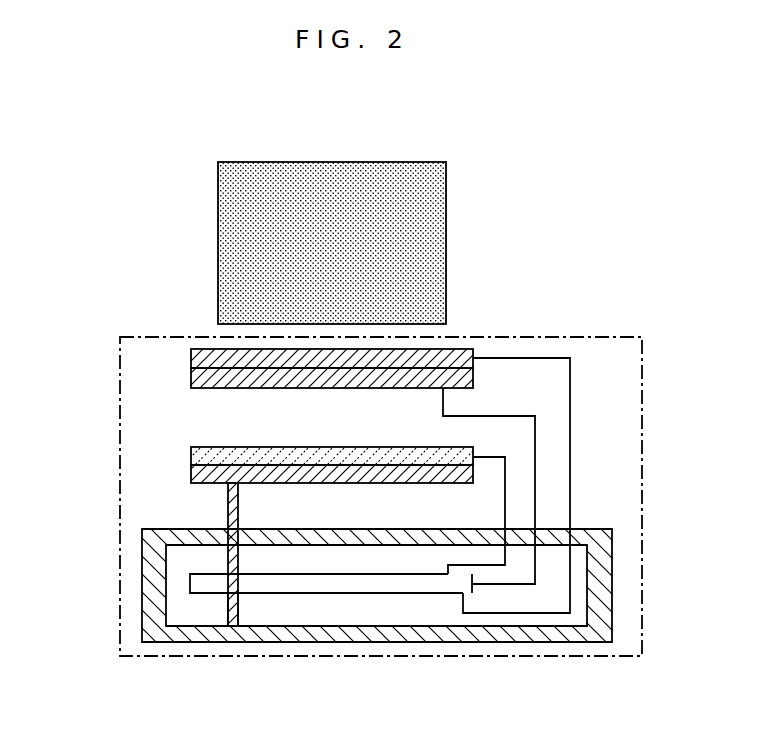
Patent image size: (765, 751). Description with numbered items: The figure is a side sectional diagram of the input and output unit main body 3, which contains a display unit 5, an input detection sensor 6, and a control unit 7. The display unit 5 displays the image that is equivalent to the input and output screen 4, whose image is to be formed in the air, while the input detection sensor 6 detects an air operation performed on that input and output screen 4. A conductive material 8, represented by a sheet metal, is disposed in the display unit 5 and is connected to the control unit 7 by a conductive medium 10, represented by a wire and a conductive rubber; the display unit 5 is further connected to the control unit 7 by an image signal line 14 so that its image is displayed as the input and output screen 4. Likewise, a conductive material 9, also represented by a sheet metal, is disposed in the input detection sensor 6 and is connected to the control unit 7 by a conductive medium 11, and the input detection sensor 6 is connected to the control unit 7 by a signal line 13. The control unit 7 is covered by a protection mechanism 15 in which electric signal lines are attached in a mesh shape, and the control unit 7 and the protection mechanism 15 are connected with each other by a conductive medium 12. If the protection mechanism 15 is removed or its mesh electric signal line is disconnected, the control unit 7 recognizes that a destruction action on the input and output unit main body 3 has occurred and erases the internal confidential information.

The input and output unit main body 3 is at (642, 518).
The input and output screen 4 is at (440, 243).
The display unit 5 is at (198, 447).
The input detection sensor 6 is at (198, 349).
The control unit 7 is at (347, 590).
The conductive material 8 is at (190, 474).
The conductive material 9 is at (190, 377).
The conductive medium 10 is at (228, 505).
The conductive medium 11 is at (535, 434).
The conductive medium 12 is at (228, 603).
The signal line 13 is at (570, 478).
The image signal line 14 is at (482, 567).
The protection mechanism 15 is at (280, 637).